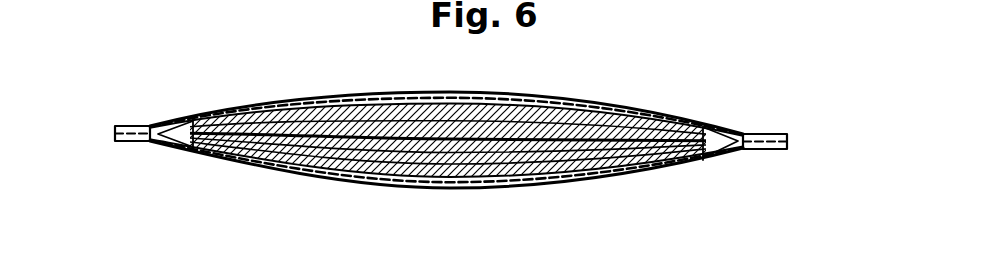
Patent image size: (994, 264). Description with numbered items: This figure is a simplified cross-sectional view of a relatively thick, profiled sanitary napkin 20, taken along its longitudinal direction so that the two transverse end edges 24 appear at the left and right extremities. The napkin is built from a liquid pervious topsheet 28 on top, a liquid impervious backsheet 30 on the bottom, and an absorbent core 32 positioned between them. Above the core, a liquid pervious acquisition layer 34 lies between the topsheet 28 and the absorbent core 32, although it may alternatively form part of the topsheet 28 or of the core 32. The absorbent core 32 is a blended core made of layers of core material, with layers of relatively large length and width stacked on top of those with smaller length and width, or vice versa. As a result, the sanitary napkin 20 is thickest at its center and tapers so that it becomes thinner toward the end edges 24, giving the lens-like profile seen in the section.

The sanitary napkin 20 is at (256, 86).
The end edges 24 is at (116, 131).
The liquid pervious topsheet 28 is at (573, 96).
The liquid impervious backsheet 30 is at (645, 173).
The absorbent core 32 is at (285, 176).
The acquisition layer 34 is at (336, 97).